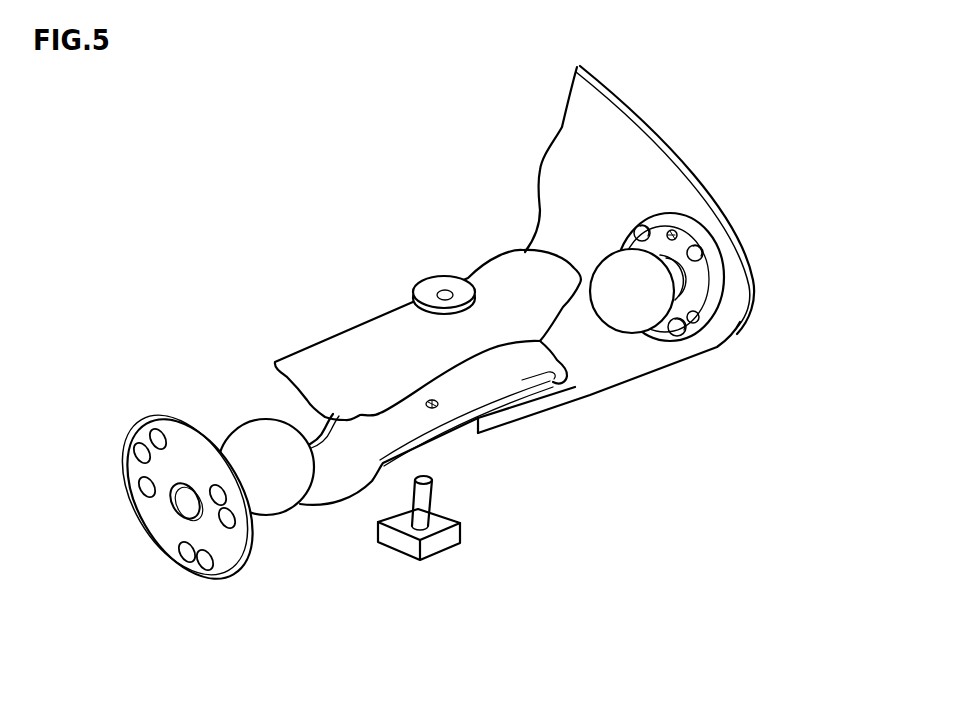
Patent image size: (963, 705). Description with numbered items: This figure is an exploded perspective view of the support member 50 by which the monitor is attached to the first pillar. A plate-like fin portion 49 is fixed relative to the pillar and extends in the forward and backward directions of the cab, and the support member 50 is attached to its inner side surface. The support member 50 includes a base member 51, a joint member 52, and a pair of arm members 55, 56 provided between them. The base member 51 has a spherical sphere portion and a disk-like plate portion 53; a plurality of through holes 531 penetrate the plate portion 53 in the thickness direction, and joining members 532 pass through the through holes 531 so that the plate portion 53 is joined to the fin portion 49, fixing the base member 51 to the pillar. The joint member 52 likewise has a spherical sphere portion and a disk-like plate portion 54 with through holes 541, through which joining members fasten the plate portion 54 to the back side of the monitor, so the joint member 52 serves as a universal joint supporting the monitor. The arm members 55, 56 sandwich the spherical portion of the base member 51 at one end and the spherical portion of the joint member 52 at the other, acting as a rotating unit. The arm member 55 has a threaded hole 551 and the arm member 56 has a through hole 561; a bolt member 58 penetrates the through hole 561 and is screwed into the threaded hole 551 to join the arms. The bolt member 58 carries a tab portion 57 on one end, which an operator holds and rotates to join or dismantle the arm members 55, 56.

The fin portion 49 is at (608, 140).
The support member 50 is at (507, 390).
The base member 51 is at (622, 317).
The joint member 52 is at (273, 490).
The plate portion 53 is at (708, 220).
The through holes 531 is at (673, 229).
The joining members 532 is at (638, 226).
The plate portion 54 is at (179, 497).
The through holes 541 is at (154, 438).
The arm member 55 is at (320, 363).
The threaded hole 551 is at (445, 294).
The arm member 56 is at (353, 497).
The through hole 561 is at (433, 398).
The tab portion 57 is at (400, 542).
The bolt member 58 is at (422, 497).